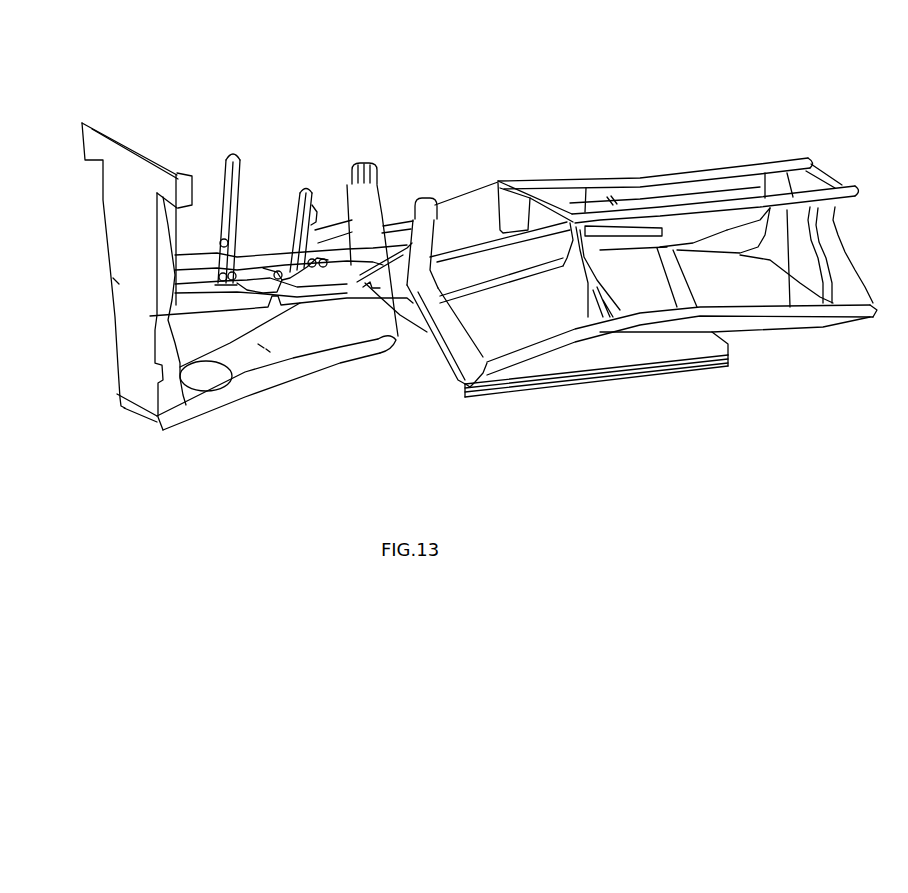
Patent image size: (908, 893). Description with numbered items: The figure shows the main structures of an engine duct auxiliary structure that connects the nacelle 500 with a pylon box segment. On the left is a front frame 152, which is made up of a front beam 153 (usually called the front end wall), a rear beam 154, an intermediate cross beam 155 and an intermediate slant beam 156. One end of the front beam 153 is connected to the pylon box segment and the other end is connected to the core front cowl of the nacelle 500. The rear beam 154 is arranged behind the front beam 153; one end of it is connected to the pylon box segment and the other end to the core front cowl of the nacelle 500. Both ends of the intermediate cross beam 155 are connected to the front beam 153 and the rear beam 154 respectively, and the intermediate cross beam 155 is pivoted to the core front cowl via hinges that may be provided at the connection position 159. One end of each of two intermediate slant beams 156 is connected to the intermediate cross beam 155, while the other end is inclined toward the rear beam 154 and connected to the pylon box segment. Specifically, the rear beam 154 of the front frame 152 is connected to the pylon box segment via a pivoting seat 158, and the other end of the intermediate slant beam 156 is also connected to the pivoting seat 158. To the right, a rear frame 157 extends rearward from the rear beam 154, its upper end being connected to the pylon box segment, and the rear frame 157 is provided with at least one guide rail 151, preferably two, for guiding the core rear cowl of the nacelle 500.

The nacelle 500 is at (405, 50).
The guide rail 151 is at (597, 377).
The front frame 152 is at (383, 105).
The front beam 153 is at (137, 343).
The rear beam 154 is at (372, 217).
The intermediate cross beam 155 is at (230, 300).
The intermediate slant beam 156 is at (300, 200).
The rear frame 157 is at (797, 152).
The pivoting seat 158 is at (354, 183).
The connection position 159 is at (192, 303).